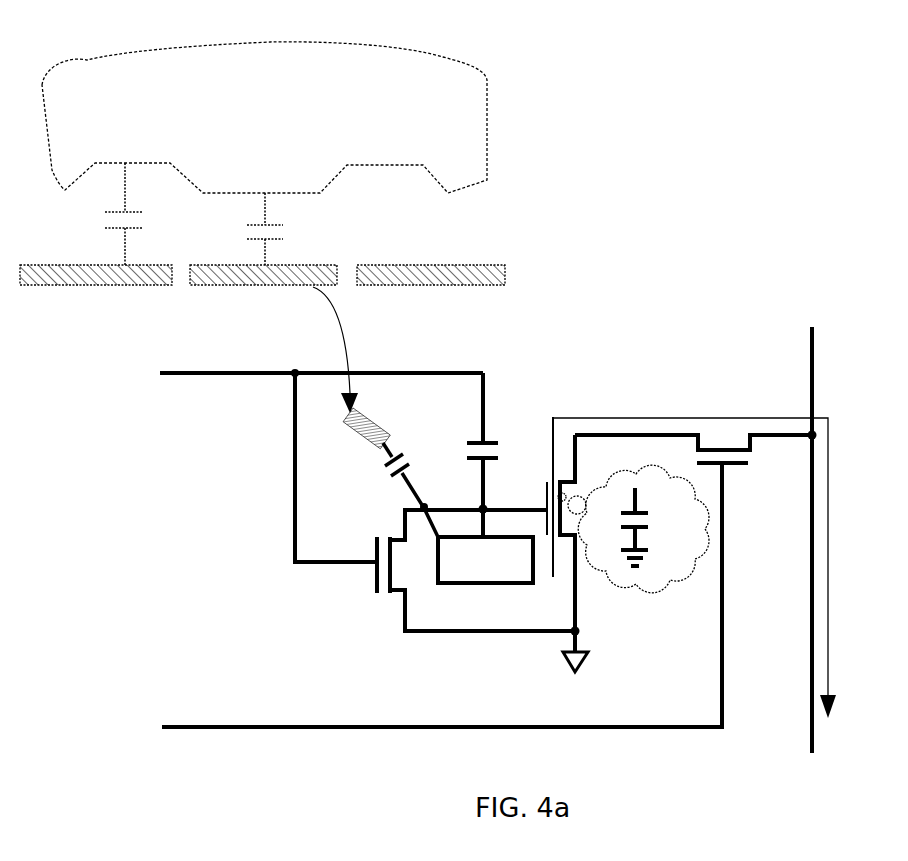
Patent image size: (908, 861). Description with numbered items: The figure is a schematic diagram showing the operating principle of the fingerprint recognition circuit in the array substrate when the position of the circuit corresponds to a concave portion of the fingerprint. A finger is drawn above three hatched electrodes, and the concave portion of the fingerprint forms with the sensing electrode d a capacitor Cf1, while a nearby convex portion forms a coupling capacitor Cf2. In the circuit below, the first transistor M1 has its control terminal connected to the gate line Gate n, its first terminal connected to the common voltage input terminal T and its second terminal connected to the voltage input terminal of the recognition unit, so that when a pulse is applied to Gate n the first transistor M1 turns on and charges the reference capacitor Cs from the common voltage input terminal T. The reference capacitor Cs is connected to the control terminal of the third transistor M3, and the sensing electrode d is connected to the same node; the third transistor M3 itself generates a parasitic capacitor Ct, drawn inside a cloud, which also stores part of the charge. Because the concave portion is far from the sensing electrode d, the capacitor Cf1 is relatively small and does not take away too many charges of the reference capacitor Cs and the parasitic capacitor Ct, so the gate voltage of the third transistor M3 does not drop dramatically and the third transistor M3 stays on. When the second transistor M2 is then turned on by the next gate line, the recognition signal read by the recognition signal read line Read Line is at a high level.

The capacitor formed by concave portion of fingerprint Cf1 is at (97, 214).
The coupling capacitor Cf2 is at (314, 365).
The reference capacitor Cs is at (488, 455).
The parasitic capacitor Ct is at (633, 529).
The first transistor M1 is at (461, 570).
The second transistor M2 is at (693, 433).
The third transistor M3 is at (540, 534).
The sensing electrode d is at (485, 560).
The common voltage input terminal T is at (573, 681).
The gate line Gate n is at (280, 461).
The recognition signal read line Read Line is at (708, 523).